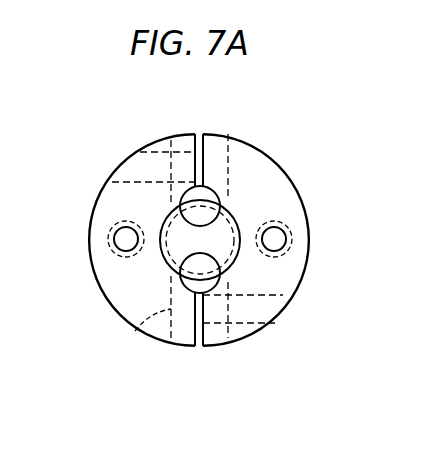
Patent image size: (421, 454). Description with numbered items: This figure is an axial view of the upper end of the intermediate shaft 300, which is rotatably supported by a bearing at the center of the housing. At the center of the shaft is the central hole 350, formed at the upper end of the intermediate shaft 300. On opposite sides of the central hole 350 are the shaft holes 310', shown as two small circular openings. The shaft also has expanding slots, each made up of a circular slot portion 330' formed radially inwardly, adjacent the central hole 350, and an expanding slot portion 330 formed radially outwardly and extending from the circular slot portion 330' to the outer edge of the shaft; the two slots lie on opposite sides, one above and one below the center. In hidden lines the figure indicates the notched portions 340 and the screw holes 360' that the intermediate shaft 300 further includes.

The intermediate shaft 300 is at (124, 306).
The shaft holes 310' is at (165, 239).
The expanding slot portion 330 is at (210, 240).
The circular slot portion 330' is at (254, 281).
The notched portions 340 is at (230, 178).
The central hole 350 is at (232, 213).
The screw holes 360' is at (153, 150).